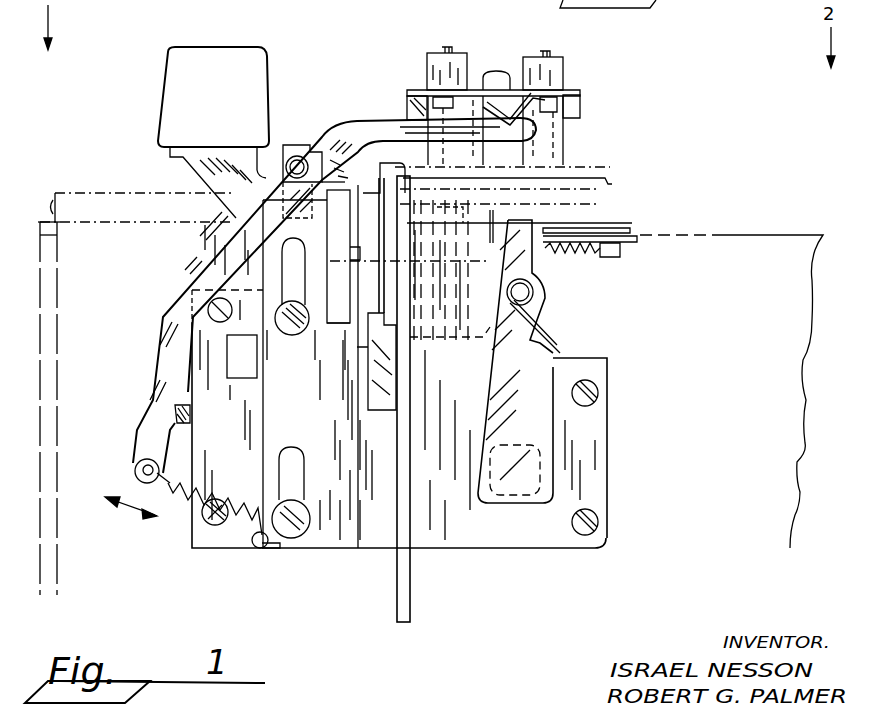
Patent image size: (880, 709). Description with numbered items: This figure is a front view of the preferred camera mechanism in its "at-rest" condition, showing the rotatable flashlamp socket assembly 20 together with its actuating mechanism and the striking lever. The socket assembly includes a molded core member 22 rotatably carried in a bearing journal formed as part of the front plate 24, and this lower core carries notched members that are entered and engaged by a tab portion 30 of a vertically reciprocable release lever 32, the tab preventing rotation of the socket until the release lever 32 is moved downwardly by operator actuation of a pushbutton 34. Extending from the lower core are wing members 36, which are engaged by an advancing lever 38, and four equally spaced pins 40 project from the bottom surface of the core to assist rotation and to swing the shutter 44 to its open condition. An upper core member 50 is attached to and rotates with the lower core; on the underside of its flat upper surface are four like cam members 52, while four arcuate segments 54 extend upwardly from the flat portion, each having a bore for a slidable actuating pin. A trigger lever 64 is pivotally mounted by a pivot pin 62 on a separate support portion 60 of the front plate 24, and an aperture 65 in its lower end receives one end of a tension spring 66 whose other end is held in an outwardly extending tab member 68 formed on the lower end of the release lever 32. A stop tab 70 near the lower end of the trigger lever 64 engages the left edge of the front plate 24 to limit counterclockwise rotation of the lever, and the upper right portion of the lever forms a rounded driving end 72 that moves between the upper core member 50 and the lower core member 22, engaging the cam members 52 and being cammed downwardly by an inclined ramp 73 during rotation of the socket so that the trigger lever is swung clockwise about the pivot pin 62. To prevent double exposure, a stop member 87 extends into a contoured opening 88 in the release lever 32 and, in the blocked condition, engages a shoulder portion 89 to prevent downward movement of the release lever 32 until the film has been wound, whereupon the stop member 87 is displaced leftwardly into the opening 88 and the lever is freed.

The flashlamp socket assembly 20 is at (698, 70).
The molded core member 22 is at (612, 174).
The front plate 24 is at (597, 452).
The tab portion 30 is at (352, 135).
The release lever 32 is at (337, 540).
The pushbutton 34 is at (222, 66).
The wing members 36 is at (602, 200).
The advancing lever 38 is at (390, 383).
The pins 40 is at (580, 215).
The shutter 44 is at (553, 350).
The upper core member 50 is at (580, 92).
The cam members 52 is at (582, 112).
The arcuate segments 54 is at (565, 60).
The support portion 60 is at (288, 146).
The pivot pin 62 is at (300, 158).
The trigger lever 64 is at (345, 128).
The aperture 65 is at (137, 465).
The tension spring 66 is at (172, 500).
The tab member 68 is at (266, 548).
The stop tab 70 is at (176, 410).
The rounded driving end 72 is at (548, 118).
The inclined ramp 73 is at (515, 95).
The stop member 87 is at (355, 252).
The contoured opening 88 is at (341, 309).
The shoulder portion 89 is at (358, 250).